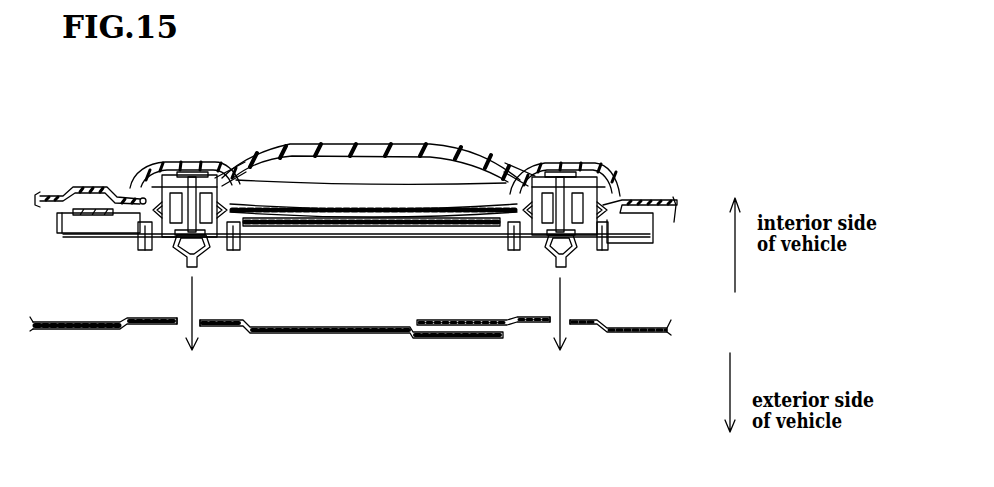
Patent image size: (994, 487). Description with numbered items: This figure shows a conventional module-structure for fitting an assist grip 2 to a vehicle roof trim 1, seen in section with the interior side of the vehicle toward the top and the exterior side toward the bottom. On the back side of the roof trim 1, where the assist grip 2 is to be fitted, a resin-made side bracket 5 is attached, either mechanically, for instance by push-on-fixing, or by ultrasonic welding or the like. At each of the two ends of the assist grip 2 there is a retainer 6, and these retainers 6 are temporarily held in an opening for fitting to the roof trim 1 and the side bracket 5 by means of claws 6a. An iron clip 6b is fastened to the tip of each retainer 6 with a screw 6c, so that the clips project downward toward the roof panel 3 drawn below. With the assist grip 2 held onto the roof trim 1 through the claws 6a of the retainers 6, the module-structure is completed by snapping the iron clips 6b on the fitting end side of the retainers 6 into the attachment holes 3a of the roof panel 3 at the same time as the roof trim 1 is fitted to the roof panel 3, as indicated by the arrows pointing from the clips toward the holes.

The roof trim 1 is at (345, 208).
The assist grip 2 is at (358, 150).
The roof panel 3 is at (383, 336).
The attachment hole 3a is at (197, 328).
The side bracket 5 is at (314, 236).
The retainer 6 is at (166, 164).
The claw 6a is at (603, 190).
The iron clip 6b is at (177, 257).
The screw 6c is at (189, 172).